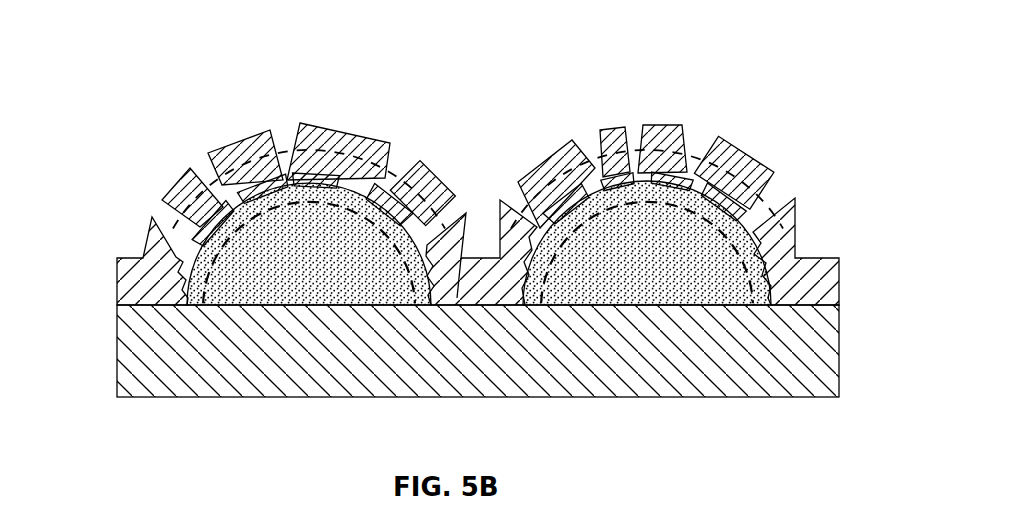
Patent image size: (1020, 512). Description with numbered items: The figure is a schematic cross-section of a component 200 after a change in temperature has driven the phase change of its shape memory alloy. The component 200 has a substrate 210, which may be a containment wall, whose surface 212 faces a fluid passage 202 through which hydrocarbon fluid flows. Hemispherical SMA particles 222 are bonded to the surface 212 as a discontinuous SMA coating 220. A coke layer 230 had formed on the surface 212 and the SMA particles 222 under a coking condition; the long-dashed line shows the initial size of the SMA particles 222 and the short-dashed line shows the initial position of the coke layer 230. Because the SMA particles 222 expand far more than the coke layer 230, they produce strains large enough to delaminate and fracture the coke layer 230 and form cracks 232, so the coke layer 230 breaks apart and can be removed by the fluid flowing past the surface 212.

The component 200 is at (130, 42).
The fluid passage 202 is at (578, 92).
The substrate 210 is at (825, 368).
The surface 212 is at (459, 287).
The SMA coating 220 is at (443, 182).
The SMA particles 222 is at (383, 197).
The coke layer 230 is at (301, 125).
The cracks 232 is at (276, 119).